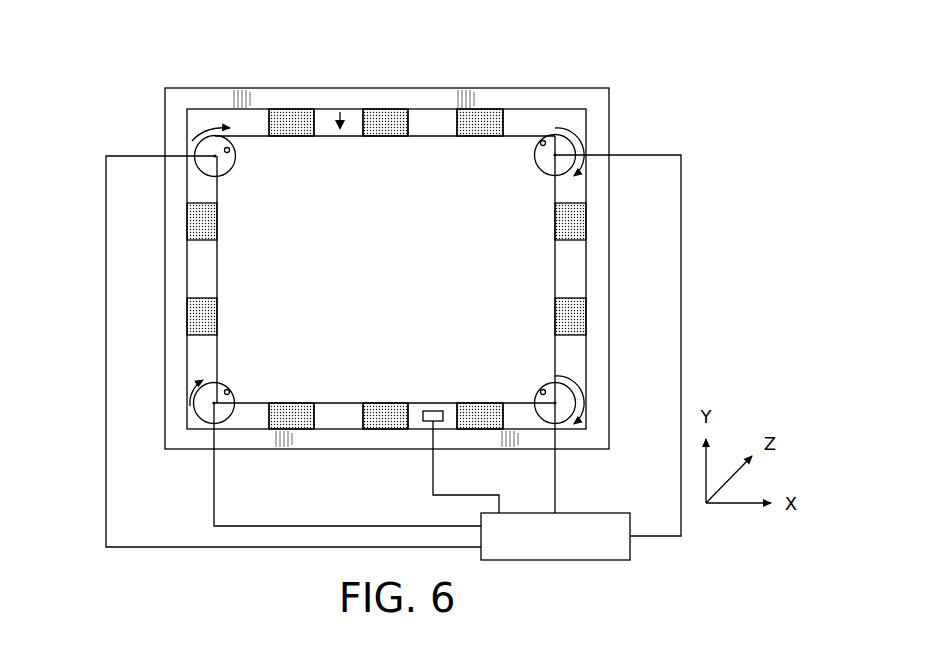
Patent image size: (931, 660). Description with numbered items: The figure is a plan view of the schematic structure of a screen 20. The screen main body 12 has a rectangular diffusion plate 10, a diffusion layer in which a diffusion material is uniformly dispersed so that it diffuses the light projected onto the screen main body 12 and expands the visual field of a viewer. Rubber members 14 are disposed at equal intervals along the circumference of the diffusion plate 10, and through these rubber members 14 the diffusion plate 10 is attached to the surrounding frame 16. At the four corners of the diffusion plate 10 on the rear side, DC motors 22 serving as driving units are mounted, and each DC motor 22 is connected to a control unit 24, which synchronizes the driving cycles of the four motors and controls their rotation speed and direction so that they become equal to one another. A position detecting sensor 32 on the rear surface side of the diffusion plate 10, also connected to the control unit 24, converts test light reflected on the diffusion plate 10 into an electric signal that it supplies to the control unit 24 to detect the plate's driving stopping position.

The diffusion plate 10 is at (442, 150).
The screen main body 12 is at (340, 114).
The rubber members 14 is at (283, 118).
The frame 16 is at (596, 118).
The screen 20 is at (133, 106).
The DC motors 22 is at (206, 171).
The control unit 24 is at (607, 513).
The position detecting sensor 32 is at (428, 421).